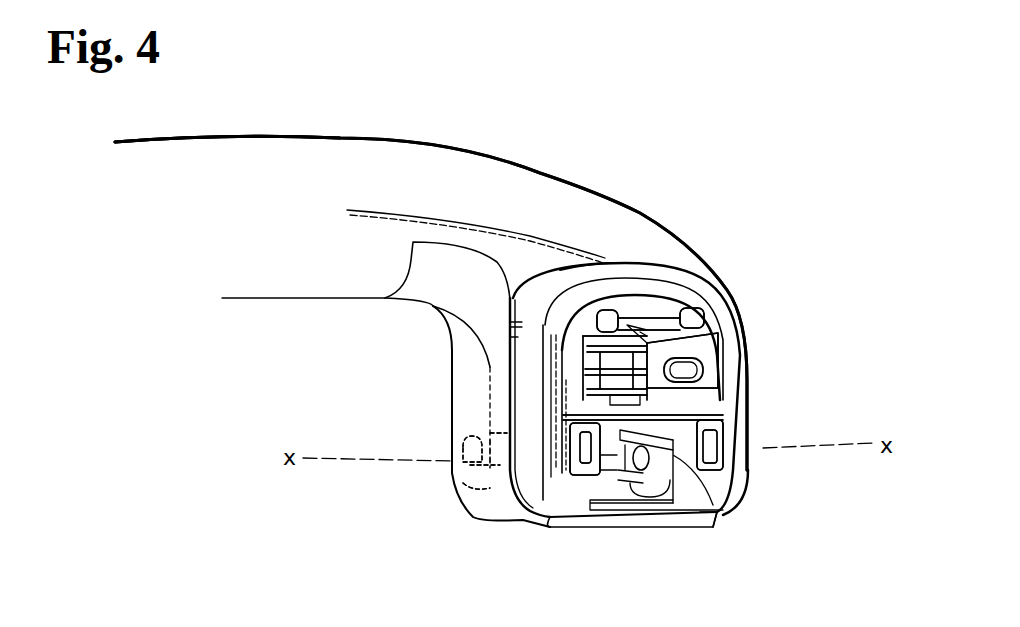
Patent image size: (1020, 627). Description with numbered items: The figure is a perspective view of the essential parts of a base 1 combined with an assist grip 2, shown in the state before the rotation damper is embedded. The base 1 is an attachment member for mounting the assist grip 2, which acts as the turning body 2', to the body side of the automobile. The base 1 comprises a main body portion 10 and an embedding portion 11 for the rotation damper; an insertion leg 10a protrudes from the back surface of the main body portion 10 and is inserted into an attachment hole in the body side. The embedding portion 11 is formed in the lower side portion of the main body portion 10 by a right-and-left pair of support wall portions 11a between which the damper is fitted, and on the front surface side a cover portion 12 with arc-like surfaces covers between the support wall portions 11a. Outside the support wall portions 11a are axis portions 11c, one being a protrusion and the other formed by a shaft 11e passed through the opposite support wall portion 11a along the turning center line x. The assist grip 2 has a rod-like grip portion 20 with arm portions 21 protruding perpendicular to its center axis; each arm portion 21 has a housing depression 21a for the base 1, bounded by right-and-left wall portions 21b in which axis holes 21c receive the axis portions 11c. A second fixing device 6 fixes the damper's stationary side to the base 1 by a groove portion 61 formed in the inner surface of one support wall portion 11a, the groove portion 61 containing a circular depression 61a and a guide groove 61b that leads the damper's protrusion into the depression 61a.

The base 1 is at (690, 297).
The assist grip 2 is at (431, 268).
The turning body 2' is at (431, 303).
The second fixing device 6 is at (621, 470).
The groove portion 61 is at (650, 354).
The circular depression 61a is at (637, 470).
The guide groove 61b is at (714, 514).
The main body portion 10 is at (667, 283).
The insertion leg 10a is at (712, 368).
The embedding portion 11 is at (593, 508).
The cover portion 12 is at (643, 445).
The support wall portions 11a is at (675, 478).
The axis portions 11c is at (458, 462).
The shaft 11e is at (485, 461).
The grip portion 20 is at (216, 160).
The arm portions 21 is at (460, 373).
The housing depressions 21a is at (606, 258).
The wall portions 21b is at (463, 485).
The axis holes 21c is at (490, 468).